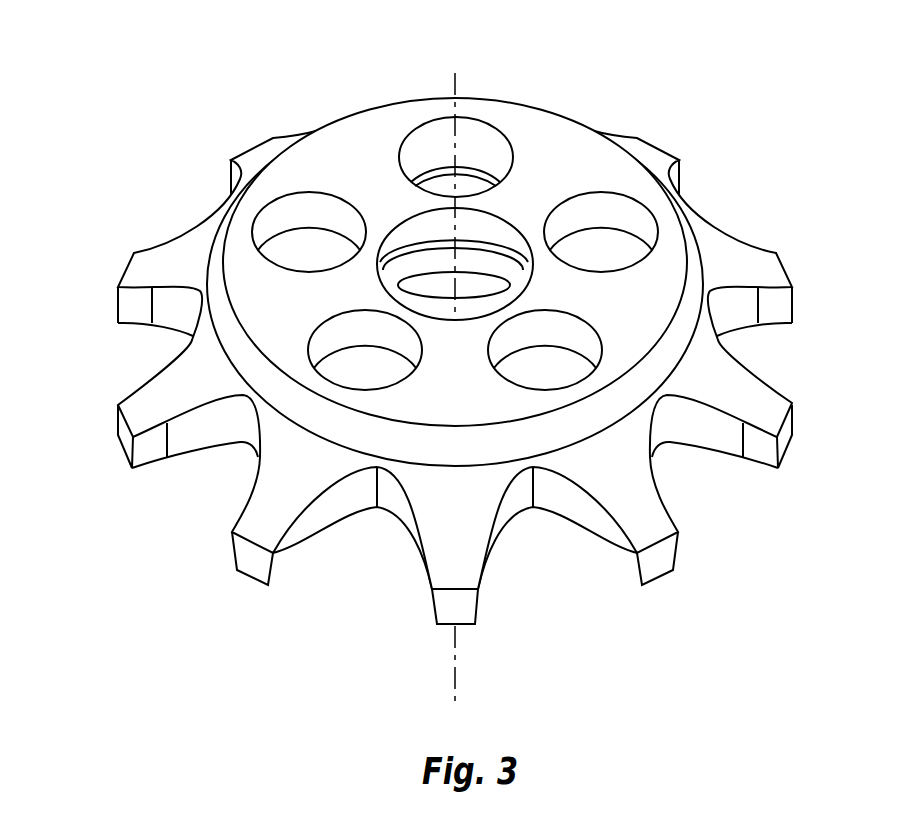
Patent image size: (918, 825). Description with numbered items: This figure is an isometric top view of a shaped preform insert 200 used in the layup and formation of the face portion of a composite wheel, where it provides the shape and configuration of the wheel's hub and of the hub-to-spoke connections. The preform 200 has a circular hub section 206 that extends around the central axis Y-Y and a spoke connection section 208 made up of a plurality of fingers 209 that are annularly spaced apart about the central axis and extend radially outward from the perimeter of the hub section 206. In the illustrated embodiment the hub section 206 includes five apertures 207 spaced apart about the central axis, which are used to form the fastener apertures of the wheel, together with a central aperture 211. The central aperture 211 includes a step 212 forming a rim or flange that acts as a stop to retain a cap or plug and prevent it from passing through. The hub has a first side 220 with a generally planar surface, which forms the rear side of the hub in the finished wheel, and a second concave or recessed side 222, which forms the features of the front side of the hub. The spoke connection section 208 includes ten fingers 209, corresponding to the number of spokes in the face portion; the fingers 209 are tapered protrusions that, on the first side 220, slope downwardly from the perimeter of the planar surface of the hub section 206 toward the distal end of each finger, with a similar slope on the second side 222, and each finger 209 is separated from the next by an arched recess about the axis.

The shaped preform insert 200 is at (194, 60).
The hub section 206 is at (658, 278).
The apertures 207 is at (474, 128).
The spoke connection section 208 is at (258, 117).
The fingers 209 is at (259, 154).
The central aperture 211 is at (392, 276).
The step 212 is at (440, 284).
The first side 220 is at (238, 278).
The second side 222 is at (236, 463).